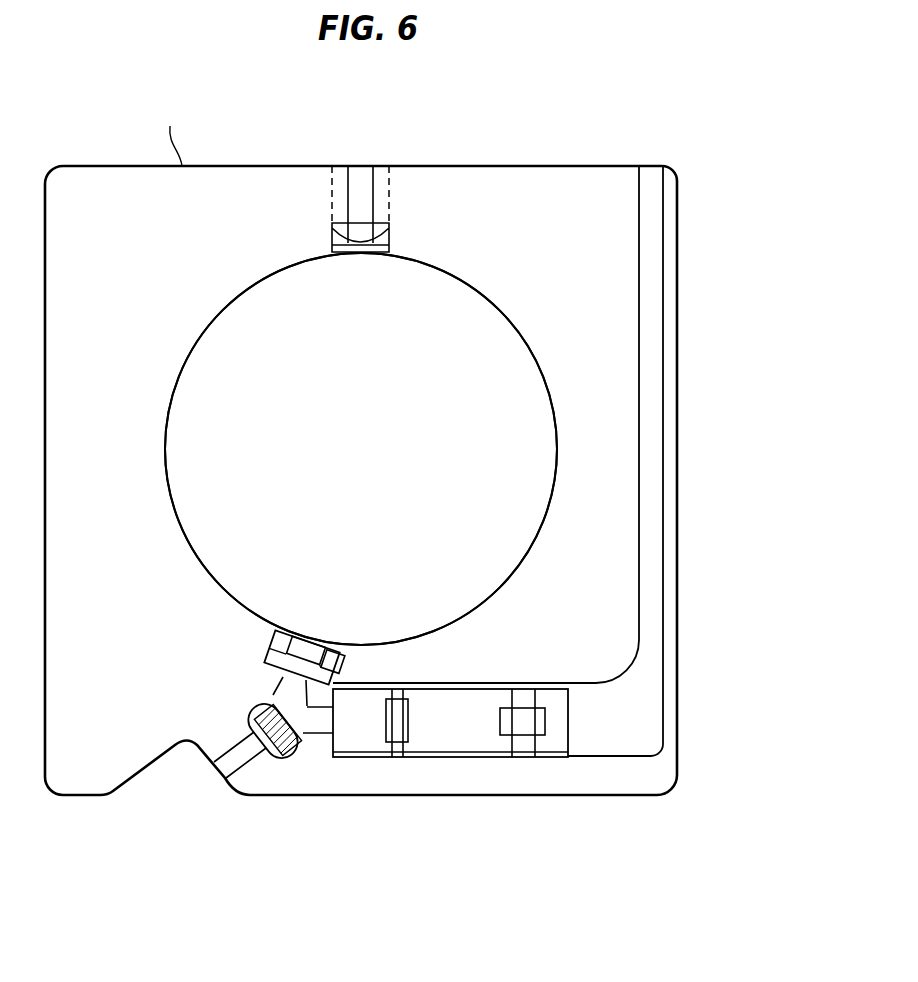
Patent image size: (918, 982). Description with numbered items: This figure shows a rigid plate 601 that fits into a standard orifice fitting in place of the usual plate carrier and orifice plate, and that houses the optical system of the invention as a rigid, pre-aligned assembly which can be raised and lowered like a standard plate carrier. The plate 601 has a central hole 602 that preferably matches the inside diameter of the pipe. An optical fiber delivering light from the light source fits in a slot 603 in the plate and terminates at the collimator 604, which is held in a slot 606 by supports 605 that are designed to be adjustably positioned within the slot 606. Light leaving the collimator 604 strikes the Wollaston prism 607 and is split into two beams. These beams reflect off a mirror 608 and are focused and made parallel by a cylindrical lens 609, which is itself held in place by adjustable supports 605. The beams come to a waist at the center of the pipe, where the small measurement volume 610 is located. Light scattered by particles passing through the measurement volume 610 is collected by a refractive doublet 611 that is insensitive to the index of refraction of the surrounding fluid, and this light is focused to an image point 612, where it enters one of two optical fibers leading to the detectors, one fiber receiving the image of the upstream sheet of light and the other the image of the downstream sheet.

The plate 601 is at (556, 182).
The central hole 602 is at (447, 272).
The slot 603 is at (653, 182).
The collimator 604 is at (545, 727).
The supports 605 is at (336, 647).
The slot 606 is at (472, 684).
The Wollaston prism 607 is at (443, 827).
The mirror 608 is at (246, 696).
The cylindrical lens 609 is at (287, 630).
The measurement volume 610 is at (383, 459).
The refractive doublet 611 is at (358, 253).
The image point 612 is at (360, 110).